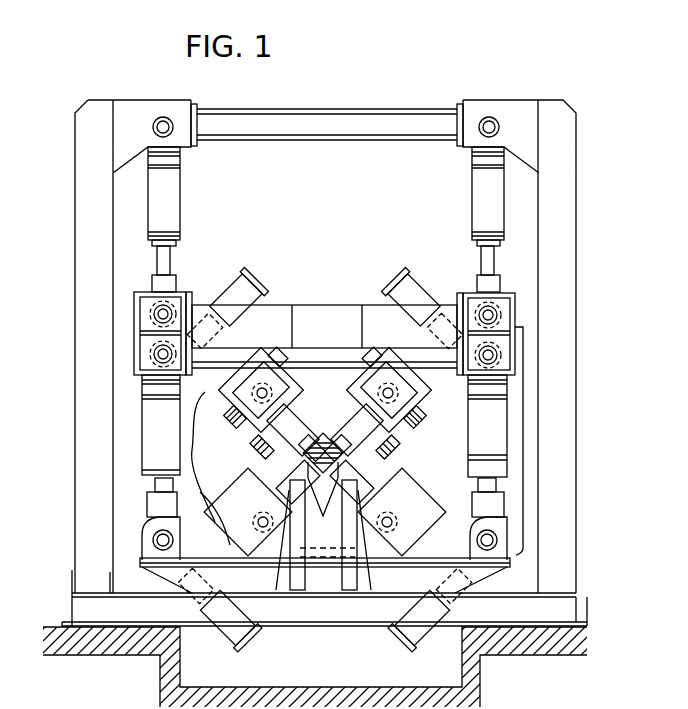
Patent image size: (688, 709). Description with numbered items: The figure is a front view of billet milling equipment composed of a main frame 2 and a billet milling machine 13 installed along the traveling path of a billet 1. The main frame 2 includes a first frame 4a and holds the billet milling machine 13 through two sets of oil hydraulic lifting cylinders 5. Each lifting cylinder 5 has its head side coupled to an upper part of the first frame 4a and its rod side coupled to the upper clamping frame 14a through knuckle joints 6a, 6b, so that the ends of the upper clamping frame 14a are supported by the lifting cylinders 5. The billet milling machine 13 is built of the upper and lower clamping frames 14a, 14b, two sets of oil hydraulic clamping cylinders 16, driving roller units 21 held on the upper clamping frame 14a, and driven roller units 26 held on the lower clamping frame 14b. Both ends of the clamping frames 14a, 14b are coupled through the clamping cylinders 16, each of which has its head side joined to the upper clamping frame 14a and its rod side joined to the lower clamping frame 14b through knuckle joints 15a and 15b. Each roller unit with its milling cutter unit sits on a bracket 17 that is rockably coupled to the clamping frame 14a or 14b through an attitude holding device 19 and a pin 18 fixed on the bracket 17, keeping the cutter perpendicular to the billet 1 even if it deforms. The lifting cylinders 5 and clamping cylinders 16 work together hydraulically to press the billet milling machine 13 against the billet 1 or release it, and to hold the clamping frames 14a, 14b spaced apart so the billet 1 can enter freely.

The billet 1 is at (345, 462).
The main frame 2 is at (588, 216).
The first frame 4a is at (397, 109).
The oil hydraulic lifting cylinder 5 is at (148, 201).
The knuckle joint 6a is at (492, 125).
The knuckle joint 6b is at (490, 316).
The billet milling machine 13 is at (523, 440).
The upper clamping frame 14a is at (317, 305).
The lower clamping frame 14b is at (450, 595).
The knuckle joint 15a is at (163, 355).
The knuckle joint 15b is at (147, 538).
The oil hydraulic clamping cylinder 16 is at (507, 416).
The bracket 17 is at (210, 375).
The pin 18 is at (258, 482).
The attitude holding device 19 is at (233, 290).
The driving roller unit 21 is at (192, 426).
The driven roller unit 26 is at (200, 492).